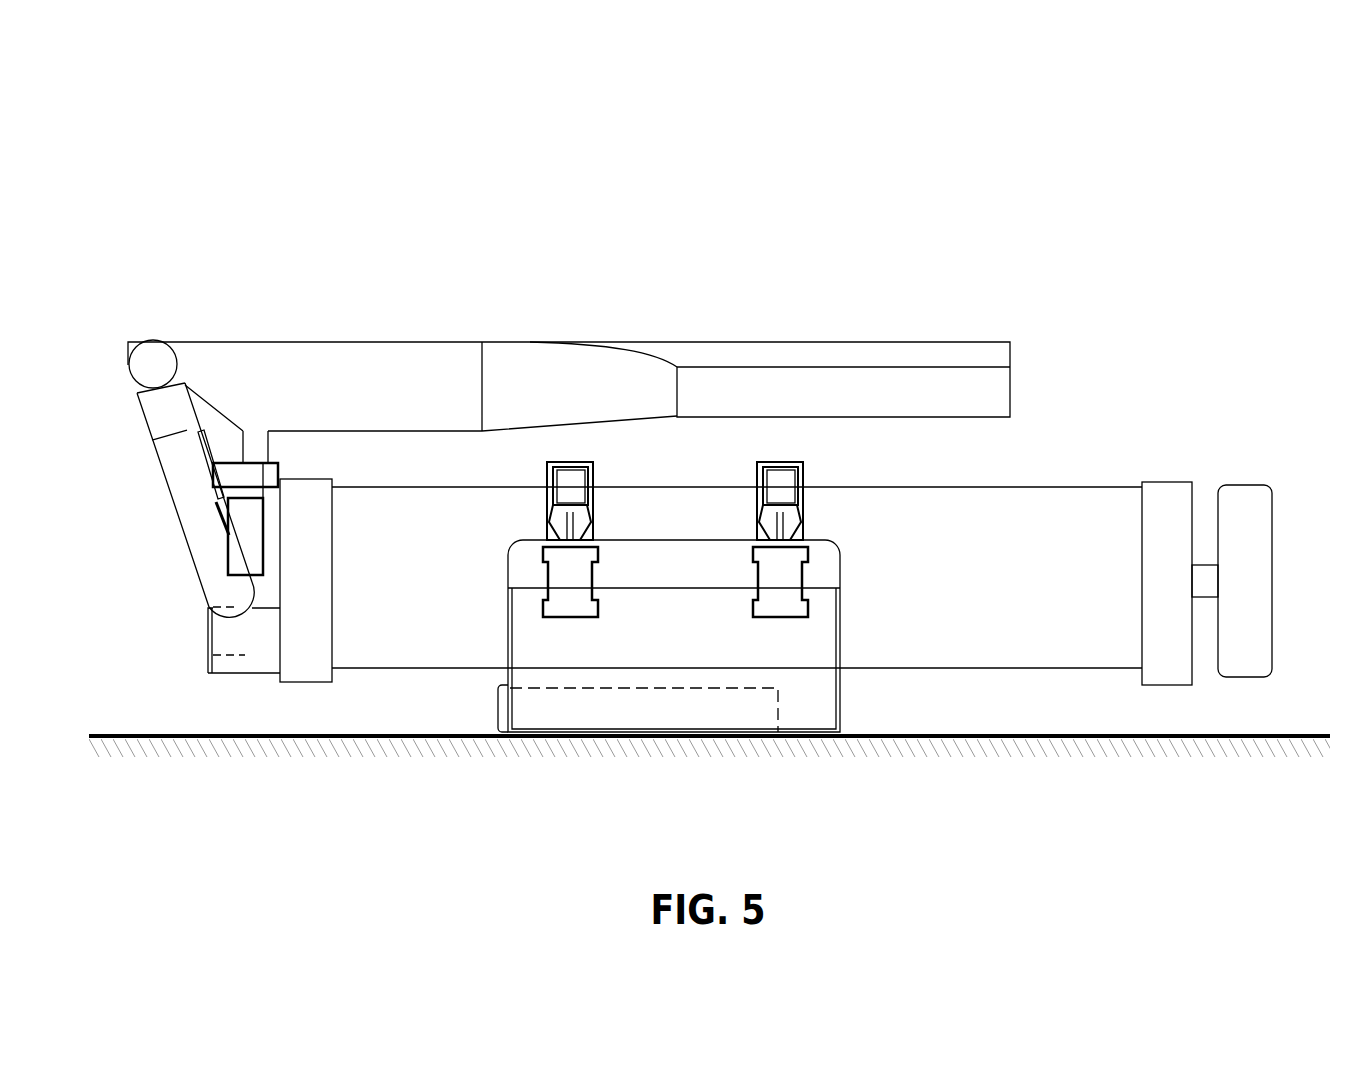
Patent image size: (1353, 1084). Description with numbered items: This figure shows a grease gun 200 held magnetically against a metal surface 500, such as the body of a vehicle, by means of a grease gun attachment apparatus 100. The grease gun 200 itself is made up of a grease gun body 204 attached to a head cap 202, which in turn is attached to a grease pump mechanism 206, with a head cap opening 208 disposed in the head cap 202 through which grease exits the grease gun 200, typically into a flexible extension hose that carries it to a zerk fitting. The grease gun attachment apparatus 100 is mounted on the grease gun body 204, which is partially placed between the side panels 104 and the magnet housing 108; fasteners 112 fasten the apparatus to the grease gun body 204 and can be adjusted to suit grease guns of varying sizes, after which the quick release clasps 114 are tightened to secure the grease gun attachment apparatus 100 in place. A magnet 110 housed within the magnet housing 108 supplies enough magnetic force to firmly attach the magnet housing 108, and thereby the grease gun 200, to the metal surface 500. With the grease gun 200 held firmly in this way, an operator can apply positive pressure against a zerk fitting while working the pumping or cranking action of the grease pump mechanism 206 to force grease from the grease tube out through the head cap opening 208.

The grease gun attachment apparatus 100 is at (736, 770).
The side panels 104 is at (812, 661).
The magnet housing 108 is at (496, 711).
The magnet 110 is at (603, 713).
The fasteners 112 is at (766, 588).
The quick release clasps 114 is at (771, 487).
The grease gun 200 is at (1112, 116).
The head cap 202 is at (205, 673).
The grease gun body 204 is at (1093, 486).
The grease pump mechanism 206 is at (835, 339).
The head cap opening 208 is at (206, 621).
The metal surface 500 is at (306, 739).